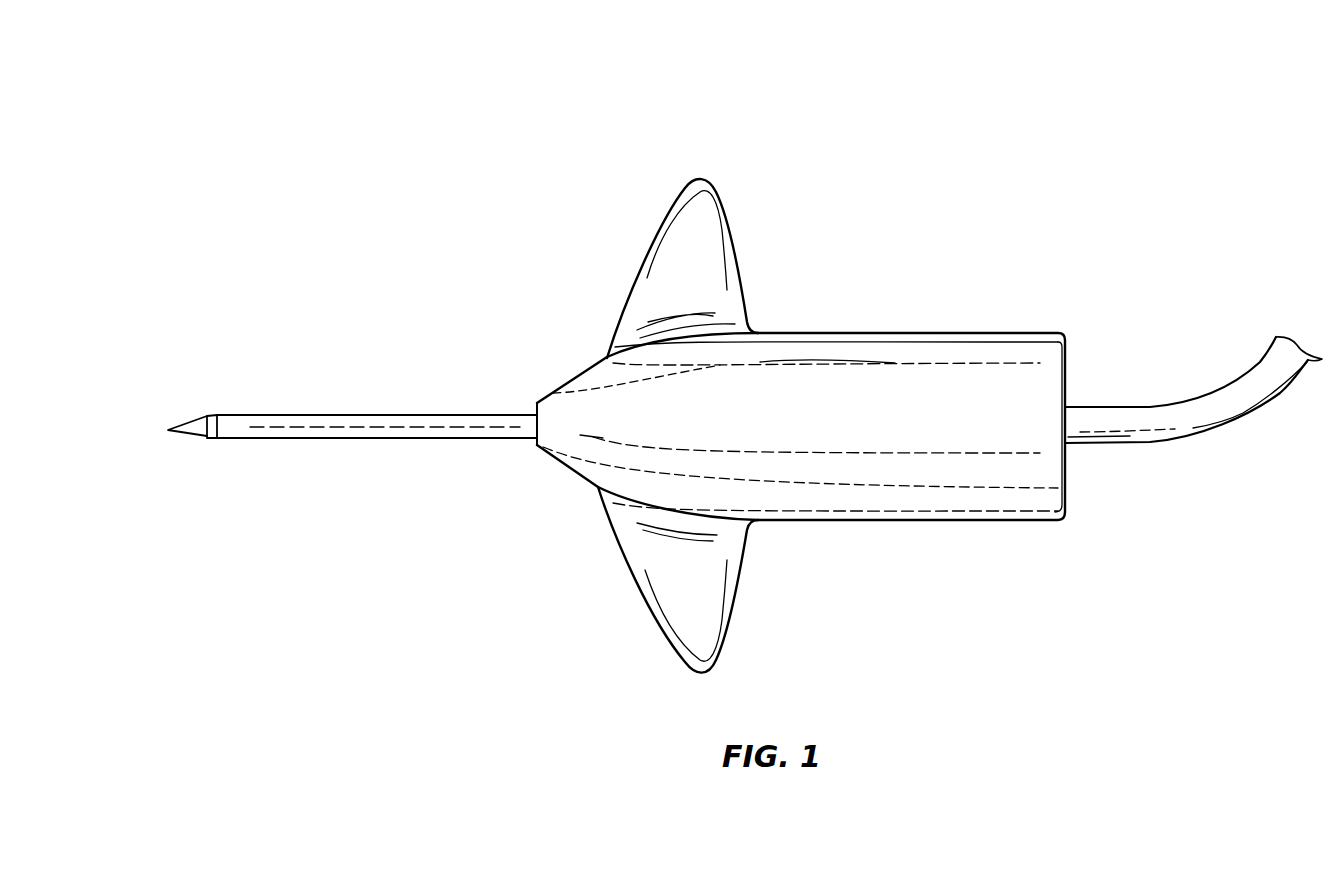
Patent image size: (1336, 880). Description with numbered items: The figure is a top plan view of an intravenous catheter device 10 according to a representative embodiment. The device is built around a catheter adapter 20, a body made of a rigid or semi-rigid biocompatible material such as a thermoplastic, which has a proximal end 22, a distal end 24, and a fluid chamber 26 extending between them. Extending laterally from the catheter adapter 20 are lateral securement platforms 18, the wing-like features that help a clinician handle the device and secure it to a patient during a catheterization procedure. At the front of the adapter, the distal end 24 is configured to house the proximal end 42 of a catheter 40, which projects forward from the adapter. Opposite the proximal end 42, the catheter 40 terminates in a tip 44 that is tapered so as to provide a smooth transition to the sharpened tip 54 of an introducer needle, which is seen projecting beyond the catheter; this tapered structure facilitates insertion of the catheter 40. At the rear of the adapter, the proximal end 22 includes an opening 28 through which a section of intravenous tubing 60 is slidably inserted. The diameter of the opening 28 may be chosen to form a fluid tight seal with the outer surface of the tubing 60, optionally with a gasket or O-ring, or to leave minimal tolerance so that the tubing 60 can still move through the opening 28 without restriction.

The intravenous catheter device 10 is at (1098, 191).
The lateral securement platforms 18 is at (667, 268).
The catheter adapter 20 is at (922, 333).
The proximal end 22 is at (1065, 505).
The distal end 24 is at (543, 455).
The fluid chamber 26 is at (748, 390).
The opening 28 is at (1067, 423).
The catheter 40 is at (407, 415).
The proximal end 42 is at (525, 415).
The tip 44 is at (205, 440).
The sharpened tip 54 is at (182, 423).
The intravenous tubing 60 is at (1200, 418).